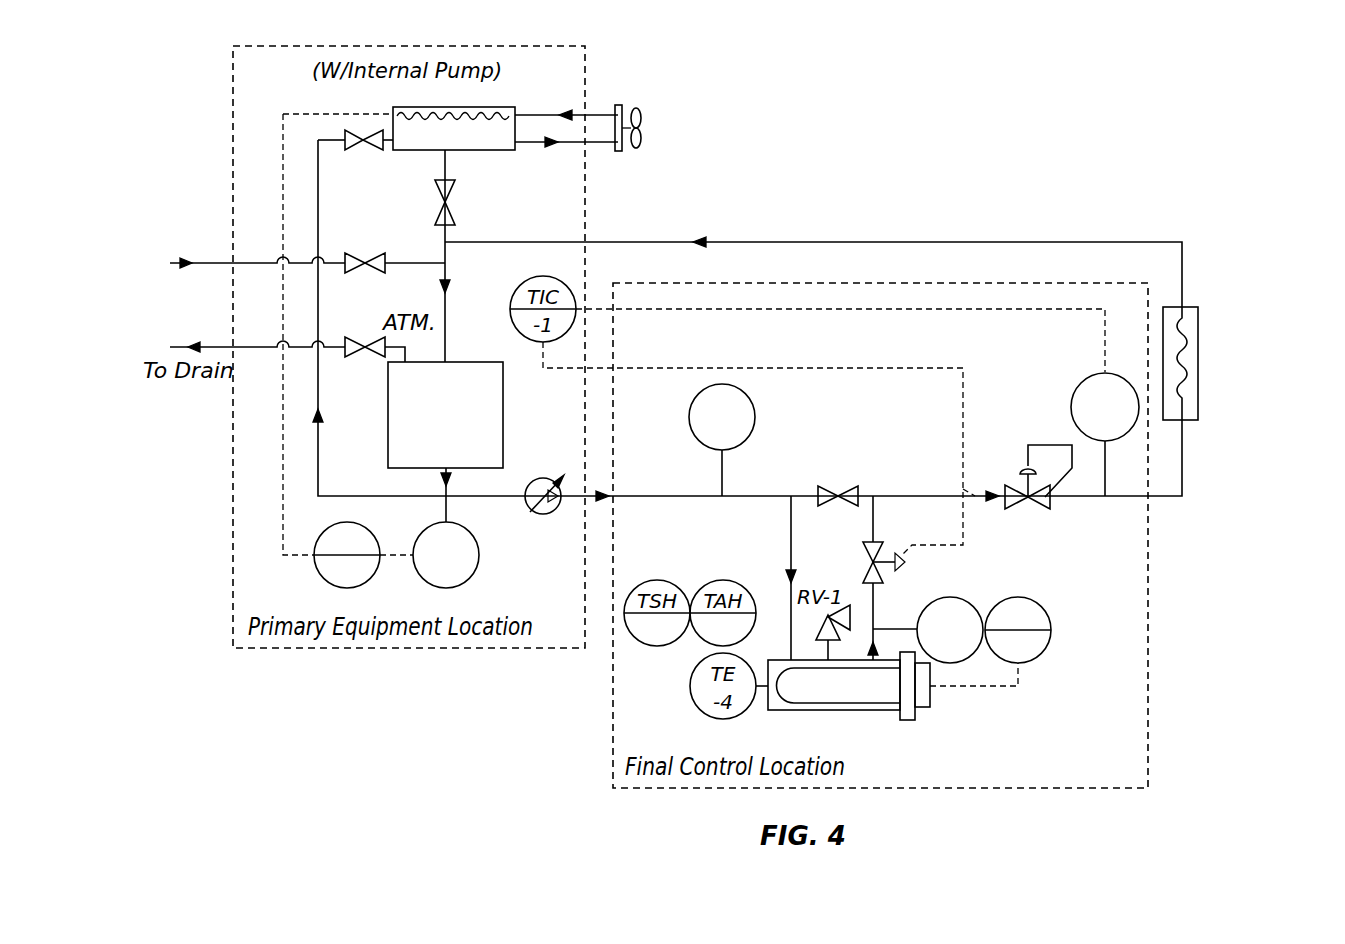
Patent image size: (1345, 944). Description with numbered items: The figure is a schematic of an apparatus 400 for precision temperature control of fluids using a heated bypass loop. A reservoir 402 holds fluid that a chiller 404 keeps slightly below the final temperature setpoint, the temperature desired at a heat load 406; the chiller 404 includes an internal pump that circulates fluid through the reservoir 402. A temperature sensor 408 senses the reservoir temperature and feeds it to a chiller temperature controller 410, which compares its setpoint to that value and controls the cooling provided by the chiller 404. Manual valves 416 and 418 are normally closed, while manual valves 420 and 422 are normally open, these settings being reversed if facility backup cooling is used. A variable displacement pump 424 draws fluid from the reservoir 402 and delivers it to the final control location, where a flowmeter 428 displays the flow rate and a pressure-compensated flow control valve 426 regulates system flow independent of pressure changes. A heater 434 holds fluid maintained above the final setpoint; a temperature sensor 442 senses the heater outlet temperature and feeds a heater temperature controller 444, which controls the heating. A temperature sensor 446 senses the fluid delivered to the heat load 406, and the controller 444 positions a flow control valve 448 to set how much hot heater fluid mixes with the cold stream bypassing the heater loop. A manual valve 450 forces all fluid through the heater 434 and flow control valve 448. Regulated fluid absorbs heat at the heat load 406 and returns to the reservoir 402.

The apparatus 400 is at (1016, 108).
The reservoir 402 is at (388, 430).
The chiller 404 is at (497, 107).
The heat load 406 is at (1198, 350).
The temperature sensor 408 is at (478, 562).
The chiller temperature controller 410 is at (315, 570).
The manual valve 416 is at (355, 252).
The manual valve 418 is at (355, 337).
The manual valve 420 is at (348, 128).
The manual valve 422 is at (455, 186).
The variable displacement pump 424 is at (561, 503).
The flow control valve 426 is at (1047, 506).
The flowmeter 428 is at (690, 417).
The heater 434 is at (838, 712).
The temperature sensor 442 is at (955, 598).
The heater temperature controller 444 is at (1025, 664).
The temperature sensor 446 is at (1137, 418).
The flow control valve 448 is at (863, 548).
The manual valve 450 is at (818, 490).